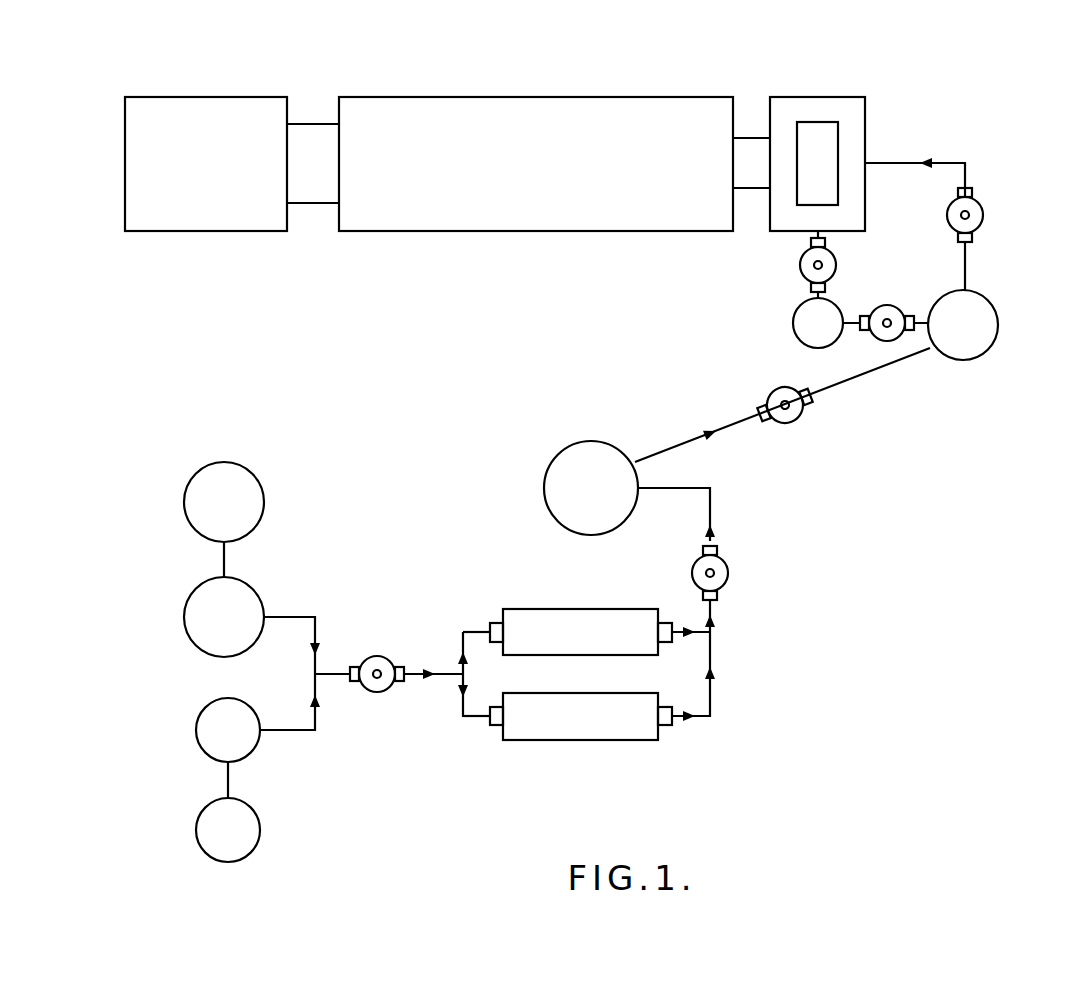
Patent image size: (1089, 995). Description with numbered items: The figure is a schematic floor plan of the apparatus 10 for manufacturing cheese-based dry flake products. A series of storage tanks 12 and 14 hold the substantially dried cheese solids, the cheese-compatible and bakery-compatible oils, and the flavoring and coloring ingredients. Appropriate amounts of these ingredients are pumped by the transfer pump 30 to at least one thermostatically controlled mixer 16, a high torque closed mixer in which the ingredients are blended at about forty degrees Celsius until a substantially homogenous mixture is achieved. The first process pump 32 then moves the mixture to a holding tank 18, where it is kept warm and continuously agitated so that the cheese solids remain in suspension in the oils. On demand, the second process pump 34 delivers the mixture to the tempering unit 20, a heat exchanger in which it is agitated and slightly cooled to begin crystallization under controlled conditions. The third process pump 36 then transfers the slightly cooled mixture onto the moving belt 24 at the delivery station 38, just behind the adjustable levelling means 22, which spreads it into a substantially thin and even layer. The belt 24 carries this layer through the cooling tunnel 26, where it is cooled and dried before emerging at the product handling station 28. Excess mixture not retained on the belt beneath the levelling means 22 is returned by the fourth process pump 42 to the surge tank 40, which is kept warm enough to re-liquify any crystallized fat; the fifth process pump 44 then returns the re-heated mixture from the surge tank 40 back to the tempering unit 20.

The apparatus 10 is at (150, 530).
The storage tank 12 is at (252, 508).
The storage tank 14 is at (248, 738).
The thermostatically controlled mixer 16 is at (580, 618).
The holding tank 18 is at (565, 470).
The tempering unit 20 is at (975, 330).
The adjustable levelling means 22 is at (825, 160).
The moving belt 24 is at (302, 124).
The cooling tunnel 26 is at (608, 110).
The product handling station 28 is at (203, 110).
The transfer pump 30 is at (372, 656).
The first process pump 32 is at (720, 580).
The second process pump 34 is at (790, 420).
The third process pump 36 is at (975, 215).
The delivery station 38 is at (885, 90).
The surge tank 40 is at (800, 330).
The fourth process pump 42 is at (800, 268).
The fifth process pump 44 is at (885, 305).